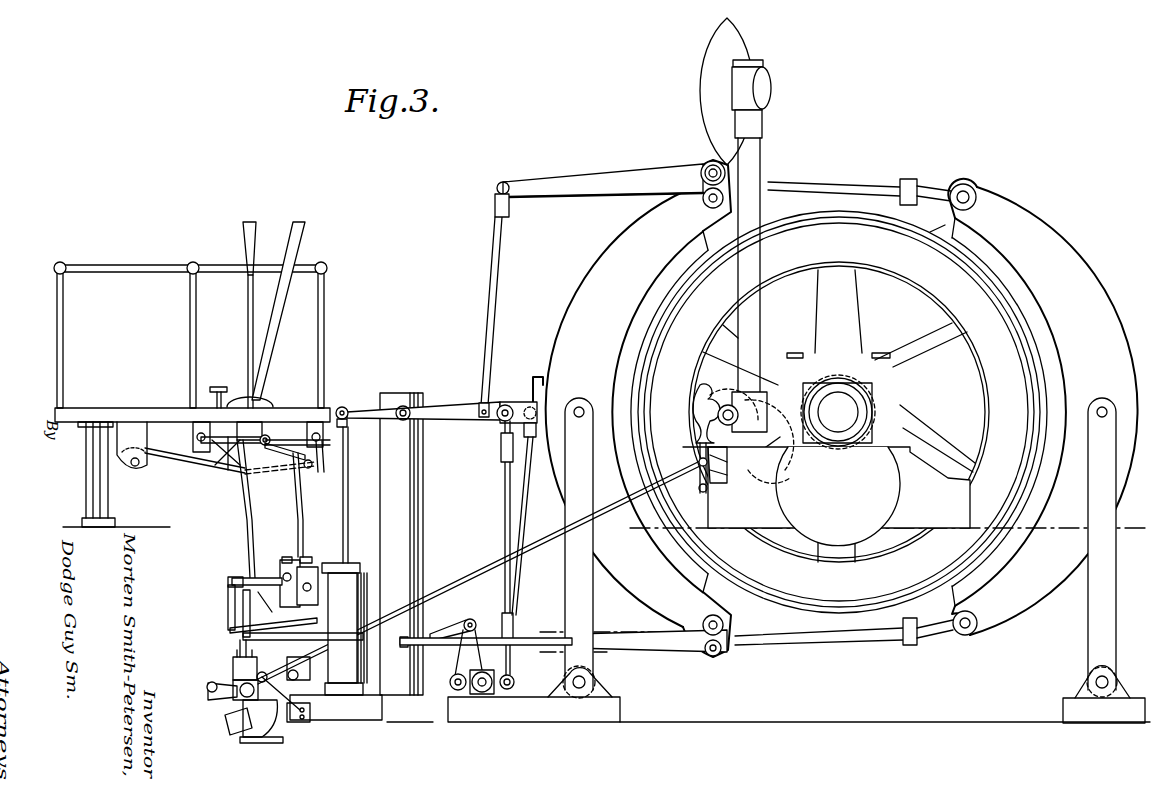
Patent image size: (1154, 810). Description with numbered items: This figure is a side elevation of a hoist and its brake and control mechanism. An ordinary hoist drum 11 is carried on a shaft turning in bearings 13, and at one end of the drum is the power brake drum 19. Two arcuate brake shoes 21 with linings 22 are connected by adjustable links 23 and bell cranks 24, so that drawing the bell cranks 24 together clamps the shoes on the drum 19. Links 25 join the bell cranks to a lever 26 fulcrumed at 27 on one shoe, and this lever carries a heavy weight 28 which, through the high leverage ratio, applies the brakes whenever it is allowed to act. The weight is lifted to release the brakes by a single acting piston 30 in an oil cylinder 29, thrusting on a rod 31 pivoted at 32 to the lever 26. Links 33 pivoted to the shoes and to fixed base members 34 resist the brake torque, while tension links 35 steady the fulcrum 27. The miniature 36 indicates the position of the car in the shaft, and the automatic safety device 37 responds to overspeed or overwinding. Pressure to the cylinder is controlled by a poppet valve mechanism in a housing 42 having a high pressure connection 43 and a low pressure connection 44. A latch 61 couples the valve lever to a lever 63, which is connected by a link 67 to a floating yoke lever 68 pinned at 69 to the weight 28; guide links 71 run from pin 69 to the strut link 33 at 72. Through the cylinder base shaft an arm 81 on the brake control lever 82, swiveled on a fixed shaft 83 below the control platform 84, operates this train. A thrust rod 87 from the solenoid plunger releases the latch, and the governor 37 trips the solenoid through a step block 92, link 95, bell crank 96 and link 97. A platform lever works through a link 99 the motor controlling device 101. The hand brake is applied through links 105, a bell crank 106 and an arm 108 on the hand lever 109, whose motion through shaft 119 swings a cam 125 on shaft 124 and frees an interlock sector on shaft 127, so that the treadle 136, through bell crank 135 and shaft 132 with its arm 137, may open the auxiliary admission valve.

The hoist drum 11 is at (914, 268).
The bearings 13 is at (903, 393).
The power brake drum 19 is at (925, 233).
The arcuate brake shoes 21 is at (835, 408).
The brake linings 22 is at (622, 353).
The adjustable links 23 is at (836, 181).
The bell cranks 24 is at (590, 180).
The links 25 is at (492, 299).
The lever 26 is at (449, 401).
The fulcrum 27 is at (510, 404).
The weight 28 is at (356, 556).
The oil cylinder 29 is at (344, 592).
The single acting piston 30 is at (355, 562).
The rod 31 is at (342, 516).
The pivot 32 is at (345, 406).
The links 33 is at (570, 599).
The fixed base members 34 is at (796, 694).
The tension links 35 is at (505, 524).
The miniature 36 is at (758, 168).
The automatic safety device 37 is at (693, 427).
The housing 42 is at (283, 559).
The high pressure connection 43 is at (309, 583).
The low pressure connection 44 is at (283, 574).
The latch 61 is at (232, 583).
The lever 63 is at (246, 574).
The link 67 is at (228, 606).
The floating lever 68 is at (335, 624).
The pin 69 is at (409, 642).
The guide links 71 is at (449, 644).
The pivot 72 is at (566, 660).
The arm 81 is at (262, 470).
The brake control lever 82 is at (246, 312).
The fixed shaft 83 is at (266, 436).
The control platform 84 is at (103, 413).
The thrust rod 87 is at (242, 646).
The step block 92 is at (233, 663).
The link 95 is at (551, 548).
The bell crank 96 is at (731, 478).
The link 97 is at (697, 457).
The link 99 is at (196, 468).
The motor controlling device 101 is at (150, 468).
The links 105 is at (435, 630).
The bell crank 106 is at (228, 700).
The arm 108 is at (272, 475).
The brake applying hand lever 109 is at (290, 338).
The shaft 119 is at (312, 665).
The shaft 124 is at (258, 742).
The cam 125 is at (241, 736).
The shaft 127 is at (197, 440).
The shaft 132 is at (315, 420).
The bell crank 135 is at (232, 470).
The treadle 136 is at (220, 386).
The arm 137 is at (327, 460).